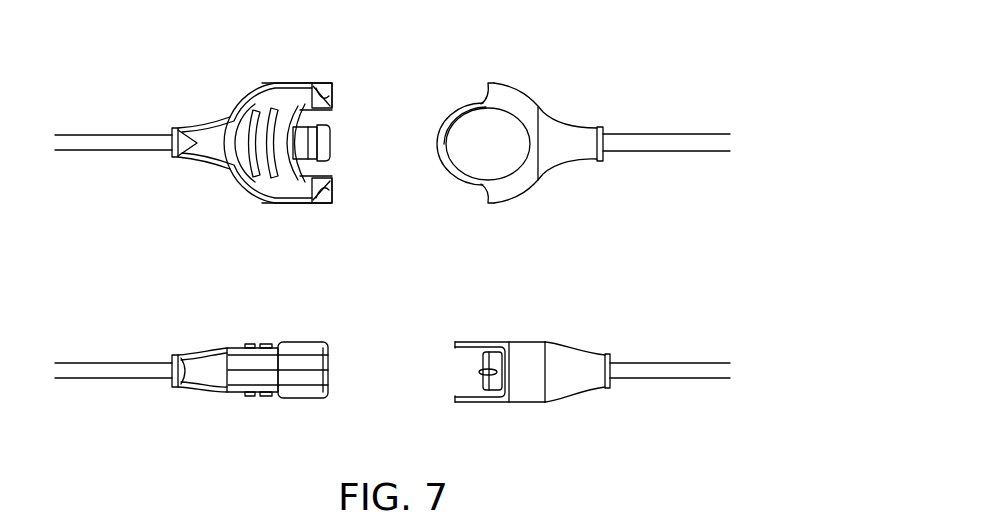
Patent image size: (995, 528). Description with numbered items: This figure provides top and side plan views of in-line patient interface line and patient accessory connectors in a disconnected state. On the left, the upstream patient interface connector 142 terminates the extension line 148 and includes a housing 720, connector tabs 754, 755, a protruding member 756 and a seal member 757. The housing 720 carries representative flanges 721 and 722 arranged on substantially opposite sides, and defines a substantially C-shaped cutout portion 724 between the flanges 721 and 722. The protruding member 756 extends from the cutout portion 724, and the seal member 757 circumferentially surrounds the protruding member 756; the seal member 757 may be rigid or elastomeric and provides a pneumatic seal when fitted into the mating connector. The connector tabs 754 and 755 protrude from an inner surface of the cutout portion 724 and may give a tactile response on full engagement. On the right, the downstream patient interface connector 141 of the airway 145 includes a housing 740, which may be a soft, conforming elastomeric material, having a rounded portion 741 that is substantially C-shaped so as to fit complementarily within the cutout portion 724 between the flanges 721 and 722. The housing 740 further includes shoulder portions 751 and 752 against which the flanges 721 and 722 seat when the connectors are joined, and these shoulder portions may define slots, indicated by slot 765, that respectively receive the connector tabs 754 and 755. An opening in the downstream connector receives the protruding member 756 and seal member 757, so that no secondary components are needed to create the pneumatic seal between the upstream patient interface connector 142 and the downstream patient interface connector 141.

The upstream patient interface connector 142 is at (165, 83).
The extension line 148 is at (97, 146).
The housing 720 is at (253, 181).
The flange 721 is at (281, 89).
The flange 722 is at (282, 196).
The cutout portion 724 is at (317, 96).
The connector tab 754 is at (326, 108).
The connector tab 755 is at (326, 181).
The protruding member 756 is at (308, 164).
The seal member 757 is at (327, 147).
The downstream patient interface connector 141 is at (627, 82).
The airway 145 is at (683, 148).
The housing 740 is at (538, 122).
The rounded portion 741 is at (467, 163).
The shoulder portion 751 is at (501, 84).
The shoulder portion 752 is at (515, 189).
The slot 765 is at (485, 374).